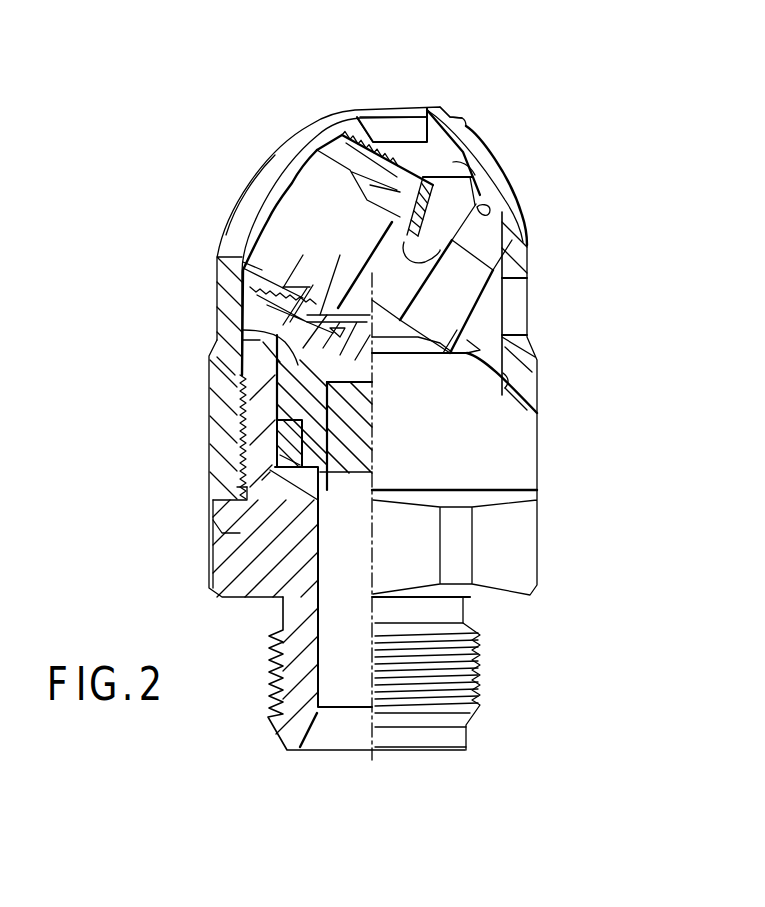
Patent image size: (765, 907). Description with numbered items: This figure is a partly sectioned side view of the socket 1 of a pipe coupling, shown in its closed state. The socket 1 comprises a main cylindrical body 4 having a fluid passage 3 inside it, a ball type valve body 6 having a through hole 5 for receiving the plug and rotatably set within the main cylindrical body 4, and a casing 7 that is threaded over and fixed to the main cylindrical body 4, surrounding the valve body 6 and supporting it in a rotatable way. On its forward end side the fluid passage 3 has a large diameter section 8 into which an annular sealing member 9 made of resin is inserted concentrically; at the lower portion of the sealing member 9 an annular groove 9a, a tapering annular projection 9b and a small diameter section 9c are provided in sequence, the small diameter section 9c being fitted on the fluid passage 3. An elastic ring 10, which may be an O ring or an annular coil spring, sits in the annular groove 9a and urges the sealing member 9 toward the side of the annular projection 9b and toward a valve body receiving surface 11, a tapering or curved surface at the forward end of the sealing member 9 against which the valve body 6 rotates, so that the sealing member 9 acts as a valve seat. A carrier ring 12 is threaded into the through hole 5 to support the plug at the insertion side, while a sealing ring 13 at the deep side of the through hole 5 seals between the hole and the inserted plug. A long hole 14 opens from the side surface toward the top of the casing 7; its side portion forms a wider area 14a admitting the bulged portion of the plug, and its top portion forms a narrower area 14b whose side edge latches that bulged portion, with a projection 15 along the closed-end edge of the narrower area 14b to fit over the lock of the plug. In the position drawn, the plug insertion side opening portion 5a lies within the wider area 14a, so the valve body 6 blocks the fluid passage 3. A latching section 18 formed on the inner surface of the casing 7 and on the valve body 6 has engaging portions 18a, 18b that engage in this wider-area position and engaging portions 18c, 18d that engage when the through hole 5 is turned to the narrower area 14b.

The socket 1 is at (180, 431).
The fluid passage 3 is at (230, 590).
The main cylindrical body 4 is at (250, 560).
The through hole 5 is at (336, 205).
The plug insertion side opening portion 5a is at (263, 163).
The ball type valve body 6 is at (242, 307).
The casing 7 is at (517, 240).
The large diameter section 8 is at (277, 403).
The annular sealing member 9 is at (240, 378).
The annular groove 9a is at (277, 450).
The tapering annular projection 9b is at (237, 490).
The small diameter section 9c is at (222, 533).
The elastic ring 10 is at (285, 440).
The valve body receiving surface 11 is at (277, 333).
The carrier ring 12 is at (240, 283).
The sealing ring 13 is at (437, 280).
The long hole 14 is at (236, 233).
The wider area 14a is at (255, 201).
The narrower area 14b is at (355, 120).
The projection 15 is at (447, 117).
The latching section 18 is at (603, 33).
The engaging portion 18a is at (452, 152).
The engaging portion 18b is at (360, 120).
The engaging portion 18c is at (487, 212).
The engaging portion 18d is at (475, 208).